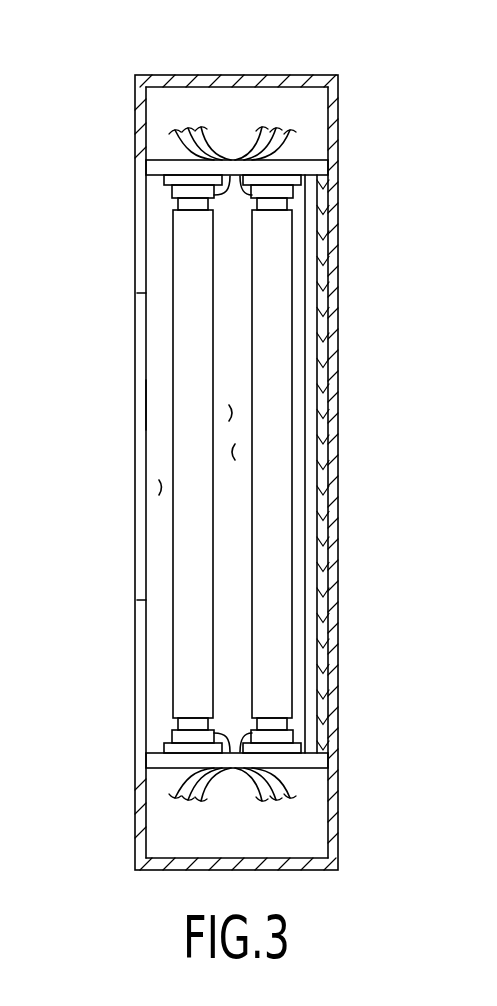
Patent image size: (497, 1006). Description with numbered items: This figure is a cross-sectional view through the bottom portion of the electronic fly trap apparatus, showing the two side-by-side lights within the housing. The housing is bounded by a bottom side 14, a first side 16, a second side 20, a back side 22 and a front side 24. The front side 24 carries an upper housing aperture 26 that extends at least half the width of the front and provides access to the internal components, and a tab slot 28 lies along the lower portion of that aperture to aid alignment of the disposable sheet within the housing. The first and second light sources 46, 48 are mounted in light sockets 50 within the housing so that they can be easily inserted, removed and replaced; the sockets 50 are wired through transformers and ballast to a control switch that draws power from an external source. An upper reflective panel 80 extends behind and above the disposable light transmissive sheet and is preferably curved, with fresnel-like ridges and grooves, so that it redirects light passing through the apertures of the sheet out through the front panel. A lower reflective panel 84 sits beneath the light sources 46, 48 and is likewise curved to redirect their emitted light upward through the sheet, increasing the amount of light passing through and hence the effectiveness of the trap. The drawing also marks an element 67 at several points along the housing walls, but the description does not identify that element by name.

The first side 16 is at (233, 75).
The second side 20 is at (290, 870).
The back side 22 is at (340, 129).
The front side 24 is at (135, 110).
The upper housing aperture 26 is at (140, 293).
The tab slot 28 is at (140, 405).
The insulation layer 67 is at (306, 165).
The upper reflective panel 80 is at (316, 345).
The light sockets 50 is at (173, 192).
The first light source 46 is at (190, 655).
The second light source 48 is at (275, 655).
The lower reflective panel 84 is at (162, 486).
The bottom side 14 is at (233, 452).